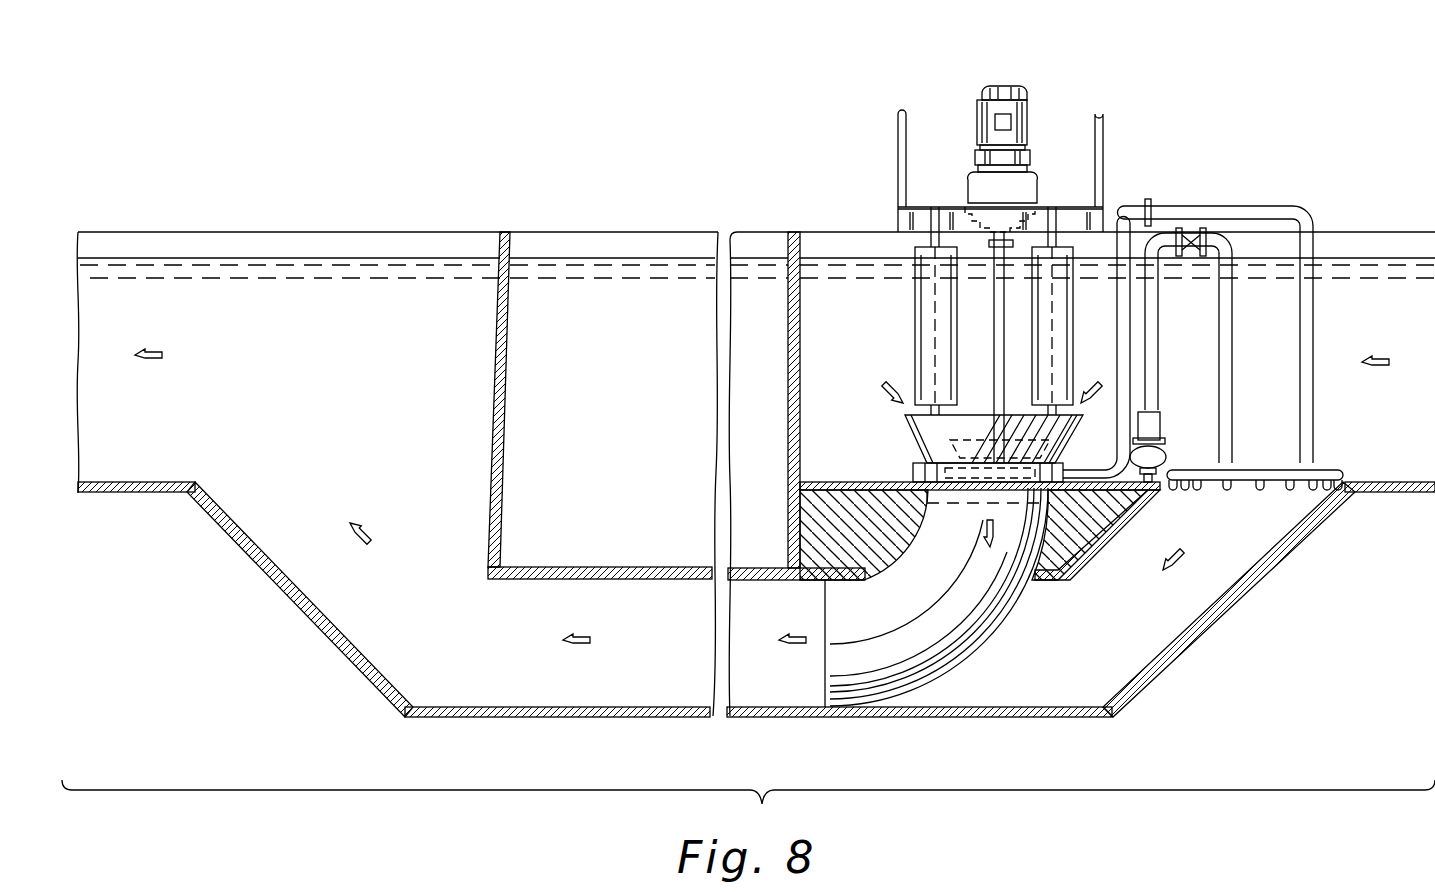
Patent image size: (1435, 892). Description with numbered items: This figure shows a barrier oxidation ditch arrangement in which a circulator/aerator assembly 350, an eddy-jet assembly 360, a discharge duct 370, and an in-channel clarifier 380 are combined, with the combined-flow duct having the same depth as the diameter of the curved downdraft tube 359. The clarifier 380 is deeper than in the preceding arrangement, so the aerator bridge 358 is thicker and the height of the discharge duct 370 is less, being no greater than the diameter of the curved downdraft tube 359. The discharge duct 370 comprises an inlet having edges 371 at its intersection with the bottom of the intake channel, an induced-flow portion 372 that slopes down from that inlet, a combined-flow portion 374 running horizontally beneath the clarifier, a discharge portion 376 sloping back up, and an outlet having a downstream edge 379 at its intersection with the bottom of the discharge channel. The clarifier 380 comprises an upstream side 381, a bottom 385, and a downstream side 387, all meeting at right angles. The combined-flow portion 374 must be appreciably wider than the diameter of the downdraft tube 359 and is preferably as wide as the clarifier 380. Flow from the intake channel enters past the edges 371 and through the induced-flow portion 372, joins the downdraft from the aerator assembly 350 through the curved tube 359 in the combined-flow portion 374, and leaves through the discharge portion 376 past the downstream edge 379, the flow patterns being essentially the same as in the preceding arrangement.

The circulator/aerator assembly 350 is at (1040, 94).
The aerator bridge 358 is at (1084, 528).
The curved downdraft tube 359 is at (990, 615).
The eddy-jet assembly 360 is at (1332, 449).
The discharge duct 370 is at (1146, 708).
The inlet edges 371 is at (1162, 490).
The induced-flow portion 372 is at (1280, 562).
The combined-flow portion 374 is at (985, 718).
The discharge portion 376 is at (312, 616).
The downstream edge 379 is at (195, 480).
The in-channel clarifier 380 is at (637, 210).
The upstream side 381 is at (793, 236).
The bottom 385 is at (630, 567).
The downstream side 387 is at (500, 420).